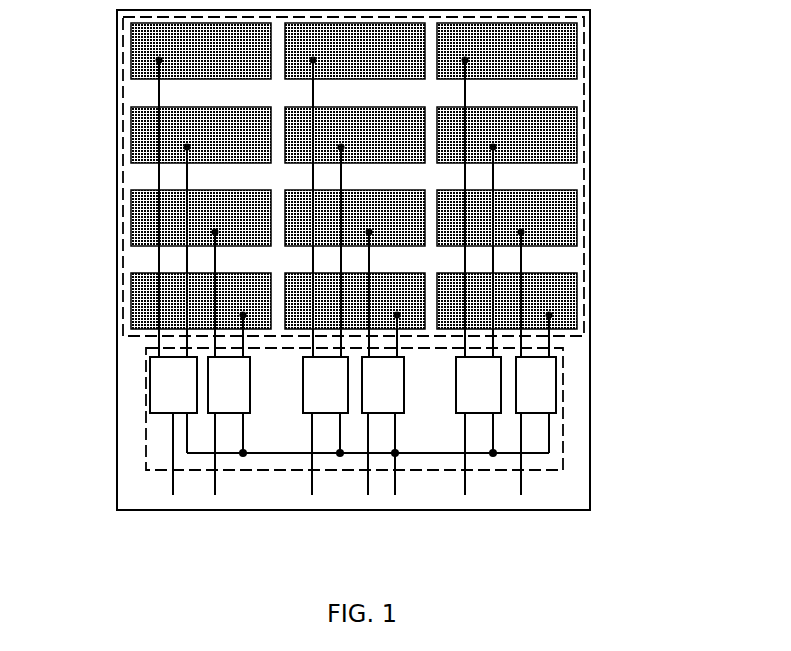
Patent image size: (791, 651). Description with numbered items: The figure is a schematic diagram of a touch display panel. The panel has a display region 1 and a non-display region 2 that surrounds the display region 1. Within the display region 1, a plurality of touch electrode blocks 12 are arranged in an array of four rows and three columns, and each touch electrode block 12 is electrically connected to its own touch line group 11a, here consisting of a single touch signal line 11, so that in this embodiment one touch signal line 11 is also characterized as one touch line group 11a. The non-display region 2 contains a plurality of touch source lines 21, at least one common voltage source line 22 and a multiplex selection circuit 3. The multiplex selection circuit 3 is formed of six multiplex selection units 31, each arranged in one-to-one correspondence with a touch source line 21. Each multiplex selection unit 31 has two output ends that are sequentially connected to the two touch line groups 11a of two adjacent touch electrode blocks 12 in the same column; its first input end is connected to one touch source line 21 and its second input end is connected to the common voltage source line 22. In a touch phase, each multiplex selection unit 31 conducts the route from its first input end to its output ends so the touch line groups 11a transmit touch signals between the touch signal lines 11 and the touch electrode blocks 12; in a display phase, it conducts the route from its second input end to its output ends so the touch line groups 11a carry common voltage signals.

The display region 1 is at (586, 42).
The non-display region 2 is at (585, 347).
The multiplex selection circuit 3 is at (563, 432).
The touch signal line 11 is at (158, 90).
The touch line group 11a is at (158, 173).
The touch electrode block 12 is at (140, 48).
The touch source line 21 is at (173, 483).
The common voltage source line 22 is at (395, 483).
The multiplex selection unit 31 is at (163, 381).